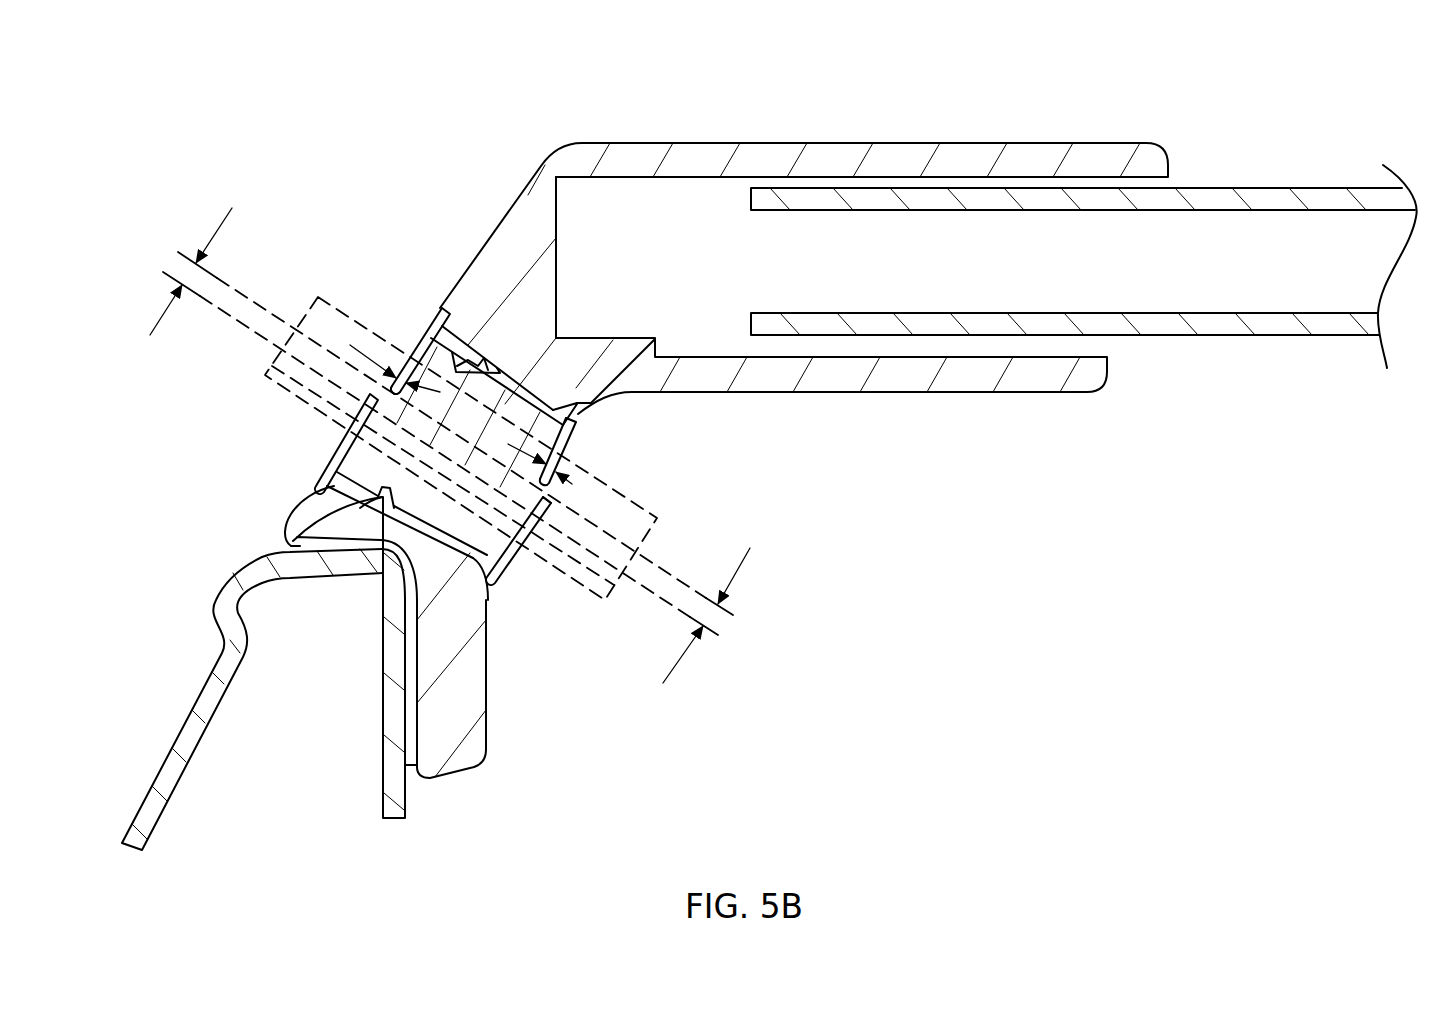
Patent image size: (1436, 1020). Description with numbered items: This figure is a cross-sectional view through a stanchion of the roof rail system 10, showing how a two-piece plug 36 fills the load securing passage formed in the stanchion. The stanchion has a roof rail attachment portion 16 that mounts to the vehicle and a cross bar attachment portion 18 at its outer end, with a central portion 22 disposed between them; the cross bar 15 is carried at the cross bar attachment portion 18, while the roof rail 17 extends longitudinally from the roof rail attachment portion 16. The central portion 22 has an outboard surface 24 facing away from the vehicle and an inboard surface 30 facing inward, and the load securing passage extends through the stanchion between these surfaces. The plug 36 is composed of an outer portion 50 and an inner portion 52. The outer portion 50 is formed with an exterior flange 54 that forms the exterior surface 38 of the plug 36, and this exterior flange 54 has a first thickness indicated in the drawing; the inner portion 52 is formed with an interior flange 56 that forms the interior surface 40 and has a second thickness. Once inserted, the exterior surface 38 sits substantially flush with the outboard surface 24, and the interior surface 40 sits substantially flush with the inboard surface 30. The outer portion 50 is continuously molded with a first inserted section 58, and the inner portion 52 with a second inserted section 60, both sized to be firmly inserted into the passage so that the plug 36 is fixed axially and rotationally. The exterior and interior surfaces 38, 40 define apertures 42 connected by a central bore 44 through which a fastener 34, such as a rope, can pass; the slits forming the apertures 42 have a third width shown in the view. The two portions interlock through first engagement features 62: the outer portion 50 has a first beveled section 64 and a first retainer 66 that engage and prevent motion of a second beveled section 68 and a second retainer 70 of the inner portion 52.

The roof rail system 10 is at (865, 592).
The cross bar 15 is at (1203, 313).
The roof rail attachment portion 16 is at (487, 750).
The roof rail 17 is at (160, 770).
The cross bar attachment portion 18 is at (1126, 150).
The central portion 22 is at (478, 217).
The outboard surface 24 is at (287, 520).
The inboard surface 30 is at (458, 657).
The fastener 34 is at (655, 527).
The plug 36 is at (447, 385).
The exterior surface 38 is at (418, 340).
The interior surface 40 is at (568, 452).
The apertures 42 is at (378, 400).
The central bore 44 is at (580, 426).
The outer portion 50 is at (400, 522).
The inner portion 52 is at (510, 558).
The exterior flange 54 is at (440, 330).
The interior flange 56 is at (503, 572).
The first inserted section 58 is at (462, 352).
The second inserted section 60 is at (575, 398).
The first engagement features 62 is at (380, 523).
The first beveled section 64 is at (392, 510).
The first retainer 66 is at (292, 542).
The second beveled section 68 is at (386, 487).
The second retainer 70 is at (398, 508).